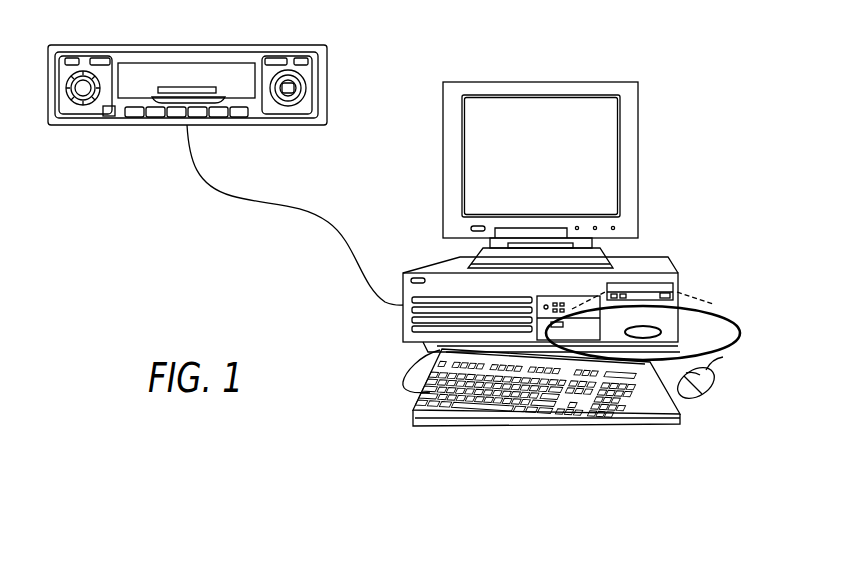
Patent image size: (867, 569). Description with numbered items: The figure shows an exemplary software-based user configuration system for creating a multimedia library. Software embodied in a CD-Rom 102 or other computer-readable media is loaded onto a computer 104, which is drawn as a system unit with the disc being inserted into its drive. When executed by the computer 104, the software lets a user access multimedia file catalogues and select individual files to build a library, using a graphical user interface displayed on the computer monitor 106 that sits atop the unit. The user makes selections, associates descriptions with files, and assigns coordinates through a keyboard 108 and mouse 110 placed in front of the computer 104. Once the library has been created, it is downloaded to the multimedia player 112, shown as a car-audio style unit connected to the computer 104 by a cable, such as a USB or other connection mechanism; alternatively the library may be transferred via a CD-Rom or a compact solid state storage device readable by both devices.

The CD-Rom 102 is at (713, 327).
The computer 104 is at (430, 266).
The computer monitor 106 is at (592, 80).
The keyboard 108 is at (413, 410).
The mouse 110 is at (710, 392).
The multimedia player 112 is at (280, 48).